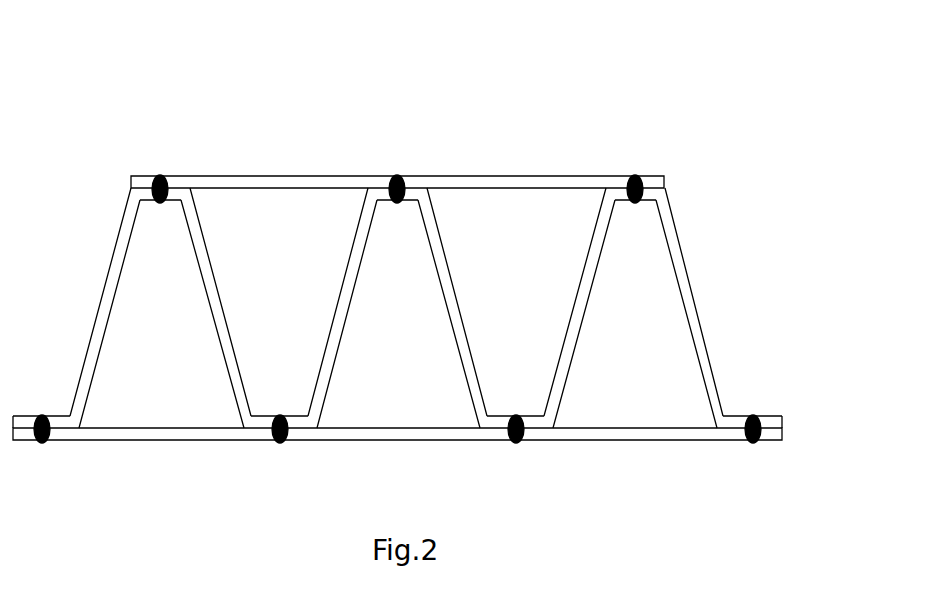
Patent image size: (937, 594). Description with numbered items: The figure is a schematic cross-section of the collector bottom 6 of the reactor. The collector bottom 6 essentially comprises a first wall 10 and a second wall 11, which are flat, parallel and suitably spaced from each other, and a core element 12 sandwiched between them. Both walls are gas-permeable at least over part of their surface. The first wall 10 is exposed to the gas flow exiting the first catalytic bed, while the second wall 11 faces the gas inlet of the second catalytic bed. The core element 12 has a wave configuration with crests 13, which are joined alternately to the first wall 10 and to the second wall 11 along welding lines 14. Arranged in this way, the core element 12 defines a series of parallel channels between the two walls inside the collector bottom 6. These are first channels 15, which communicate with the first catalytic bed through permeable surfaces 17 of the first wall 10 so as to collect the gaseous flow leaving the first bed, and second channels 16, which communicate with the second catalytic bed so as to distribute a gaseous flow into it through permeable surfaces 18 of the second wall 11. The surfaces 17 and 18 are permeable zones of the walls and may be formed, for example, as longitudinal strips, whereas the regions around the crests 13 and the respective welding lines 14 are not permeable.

The collector bottom 6 is at (742, 121).
The first wall 10 is at (303, 177).
The second wall 11 is at (158, 436).
The core element 12 is at (697, 307).
The crests 13 is at (410, 198).
The welding lines 14 is at (400, 176).
The first channels 15 is at (297, 263).
The second channels 16 is at (177, 377).
The permeable surfaces 17 is at (240, 160).
The permeable surfaces 18 is at (95, 456).